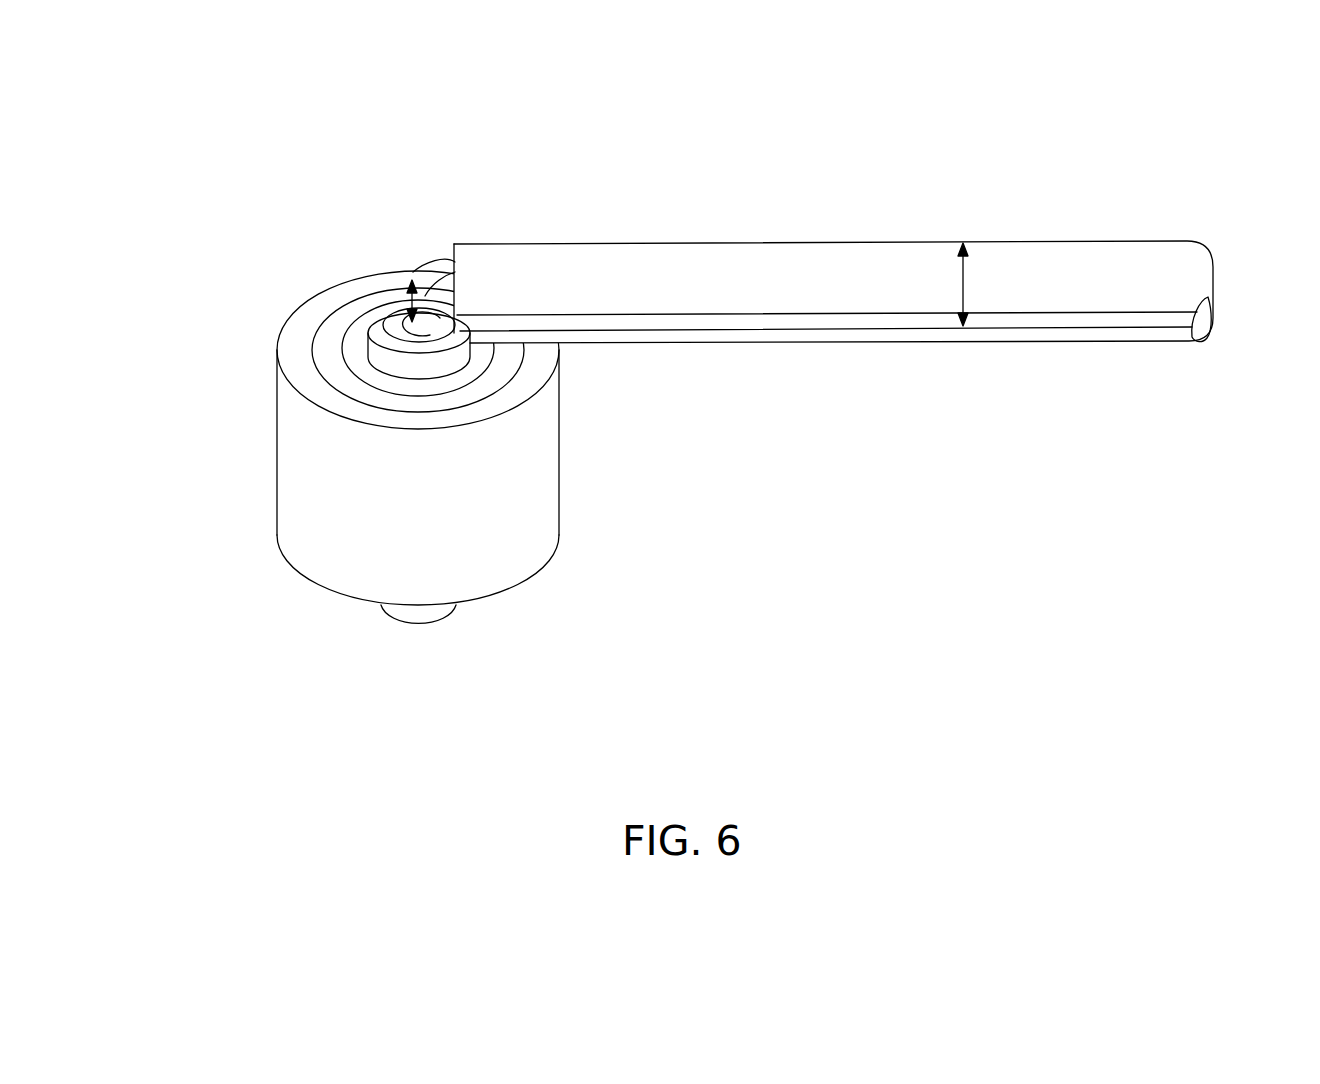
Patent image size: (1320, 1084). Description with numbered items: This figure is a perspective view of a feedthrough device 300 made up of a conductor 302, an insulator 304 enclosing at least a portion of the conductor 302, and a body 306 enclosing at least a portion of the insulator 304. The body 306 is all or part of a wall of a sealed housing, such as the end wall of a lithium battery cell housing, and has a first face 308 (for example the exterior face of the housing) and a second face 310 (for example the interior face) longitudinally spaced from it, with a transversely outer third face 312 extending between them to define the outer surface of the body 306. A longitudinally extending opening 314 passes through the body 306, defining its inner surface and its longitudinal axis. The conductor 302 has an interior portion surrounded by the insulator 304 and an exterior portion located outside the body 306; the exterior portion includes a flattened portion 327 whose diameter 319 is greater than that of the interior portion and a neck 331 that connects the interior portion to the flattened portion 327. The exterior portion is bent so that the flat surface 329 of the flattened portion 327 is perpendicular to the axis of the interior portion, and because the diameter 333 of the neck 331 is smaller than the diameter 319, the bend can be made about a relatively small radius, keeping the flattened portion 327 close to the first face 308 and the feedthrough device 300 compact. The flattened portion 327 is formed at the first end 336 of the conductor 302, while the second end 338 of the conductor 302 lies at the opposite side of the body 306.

The feedthrough device 300 is at (701, 404).
The conductor 302 is at (395, 616).
The insulator 304 is at (382, 305).
The body 306 is at (417, 428).
The first face 308 is at (298, 327).
The second face 310 is at (308, 578).
The third face 312 is at (548, 462).
The longitudinally extending opening 314 is at (358, 338).
The diameter of the flattened portion 319 is at (965, 275).
The flattened portion 327 is at (863, 257).
The flat surface 329 is at (742, 270).
The neck 331 is at (424, 297).
The diameter of the neck 333 is at (430, 307).
The first end 336 is at (1220, 261).
The second end 338 is at (460, 620).